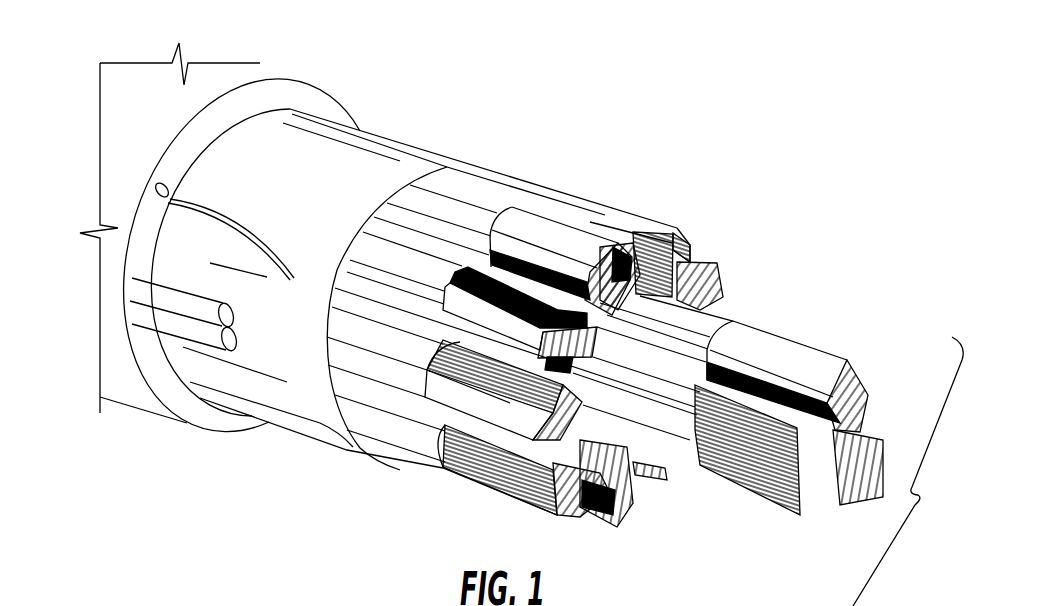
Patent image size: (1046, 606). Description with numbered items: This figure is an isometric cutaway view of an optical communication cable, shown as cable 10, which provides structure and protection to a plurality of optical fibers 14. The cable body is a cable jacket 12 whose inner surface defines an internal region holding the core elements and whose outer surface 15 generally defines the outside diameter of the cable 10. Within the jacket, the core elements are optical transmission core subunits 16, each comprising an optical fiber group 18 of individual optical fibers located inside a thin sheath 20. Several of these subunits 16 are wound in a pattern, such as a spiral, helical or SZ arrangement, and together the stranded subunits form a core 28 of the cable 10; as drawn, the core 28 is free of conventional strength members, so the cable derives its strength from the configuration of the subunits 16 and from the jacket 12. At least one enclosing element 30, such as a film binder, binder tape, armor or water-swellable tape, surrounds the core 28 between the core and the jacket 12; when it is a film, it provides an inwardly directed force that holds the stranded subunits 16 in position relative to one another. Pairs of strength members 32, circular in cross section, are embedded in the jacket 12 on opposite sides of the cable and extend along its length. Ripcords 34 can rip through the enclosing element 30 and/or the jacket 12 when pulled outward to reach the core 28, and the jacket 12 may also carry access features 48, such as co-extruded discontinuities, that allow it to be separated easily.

The cable 10 is at (500, 100).
The cable jacket 12 is at (242, 102).
The optical fibers 14 is at (857, 365).
The outer surface 15 is at (163, 82).
The optical transmission core subunit 16 is at (582, 185).
The optical fiber group 18 is at (650, 225).
The thin sheath 20 is at (507, 178).
The core 28 is at (908, 471).
The enclosing element 30 is at (302, 410).
The strength members 32 is at (140, 313).
The ripcords 34 is at (230, 217).
The access features 48 is at (157, 187).